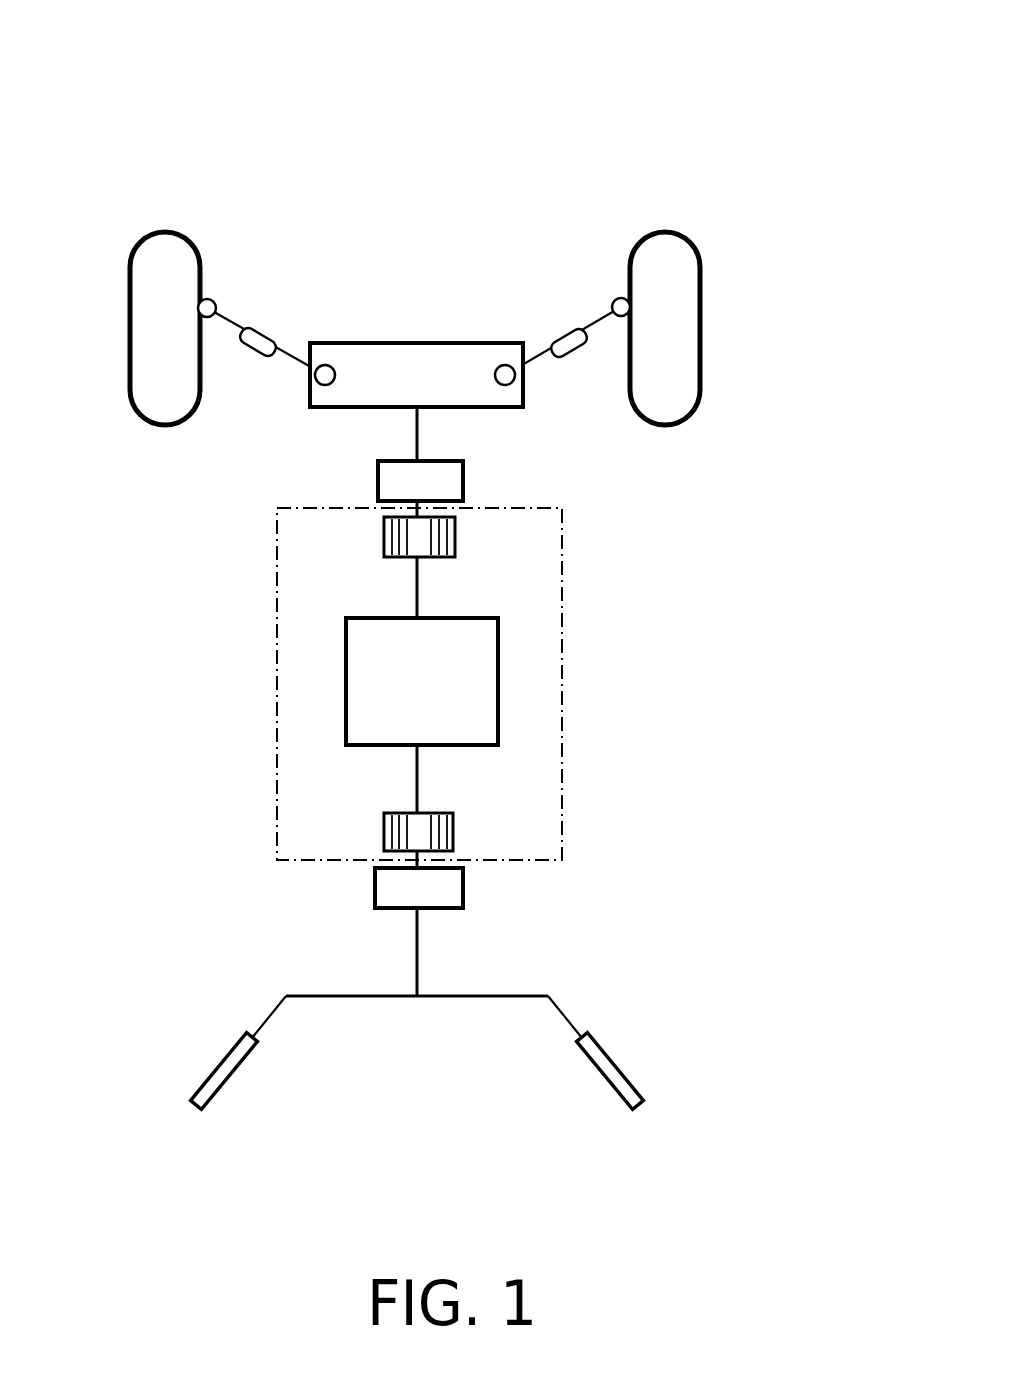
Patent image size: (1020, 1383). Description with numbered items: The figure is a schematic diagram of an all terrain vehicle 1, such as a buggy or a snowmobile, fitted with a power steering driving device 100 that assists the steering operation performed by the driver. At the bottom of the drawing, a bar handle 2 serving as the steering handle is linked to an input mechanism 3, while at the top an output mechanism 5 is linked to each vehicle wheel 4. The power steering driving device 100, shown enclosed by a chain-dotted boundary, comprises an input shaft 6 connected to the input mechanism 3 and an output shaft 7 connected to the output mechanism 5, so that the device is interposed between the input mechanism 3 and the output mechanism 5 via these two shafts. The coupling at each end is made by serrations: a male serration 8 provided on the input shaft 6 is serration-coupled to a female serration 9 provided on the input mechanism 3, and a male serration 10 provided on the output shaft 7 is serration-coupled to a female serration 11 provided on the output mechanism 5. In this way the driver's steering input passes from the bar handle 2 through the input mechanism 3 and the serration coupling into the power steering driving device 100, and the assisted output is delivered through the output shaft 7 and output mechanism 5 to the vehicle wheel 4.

The all terrain vehicle 1 is at (752, 147).
The bar handle 2 is at (208, 1071).
The input mechanism 3 is at (258, 863).
The vehicle wheel 4 is at (167, 232).
The output mechanism 5 is at (258, 377).
The input shaft 6 is at (418, 785).
The output shaft 7 is at (418, 590).
The male serration 8 is at (453, 830).
The female serration 9 is at (463, 883).
The male serration 10 is at (455, 533).
The female serration 11 is at (463, 473).
The power steering driving device 100 is at (277, 688).